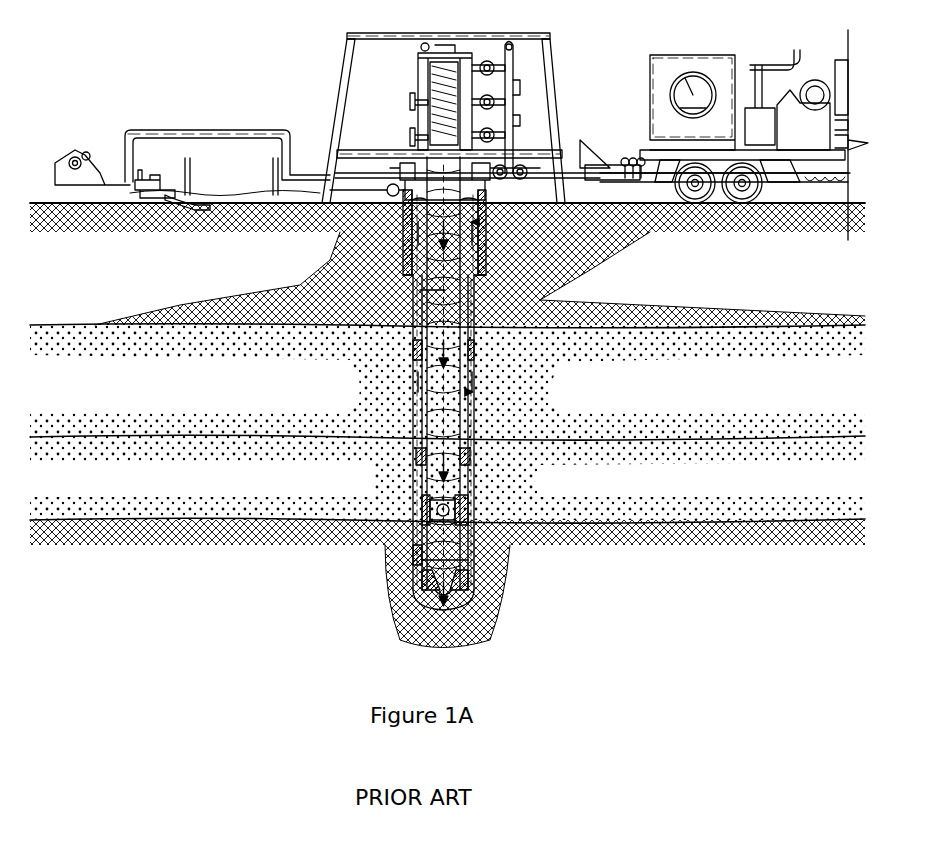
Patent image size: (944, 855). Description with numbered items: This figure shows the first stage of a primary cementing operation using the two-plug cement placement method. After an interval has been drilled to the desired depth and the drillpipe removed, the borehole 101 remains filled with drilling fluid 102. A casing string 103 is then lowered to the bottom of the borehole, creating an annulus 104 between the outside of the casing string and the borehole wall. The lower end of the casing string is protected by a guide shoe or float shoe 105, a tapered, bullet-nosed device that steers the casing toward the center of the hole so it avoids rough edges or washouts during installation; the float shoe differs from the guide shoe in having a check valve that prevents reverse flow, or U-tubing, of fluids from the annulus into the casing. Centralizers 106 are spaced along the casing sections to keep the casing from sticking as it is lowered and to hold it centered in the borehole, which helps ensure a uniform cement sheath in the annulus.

The borehole 101 is at (472, 296).
The drilling fluid 102 is at (420, 290).
The casing string 103 is at (478, 420).
The annulus 104 is at (478, 478).
The guide shoe or float shoe 105 is at (468, 590).
The centralizers 106 is at (415, 560).